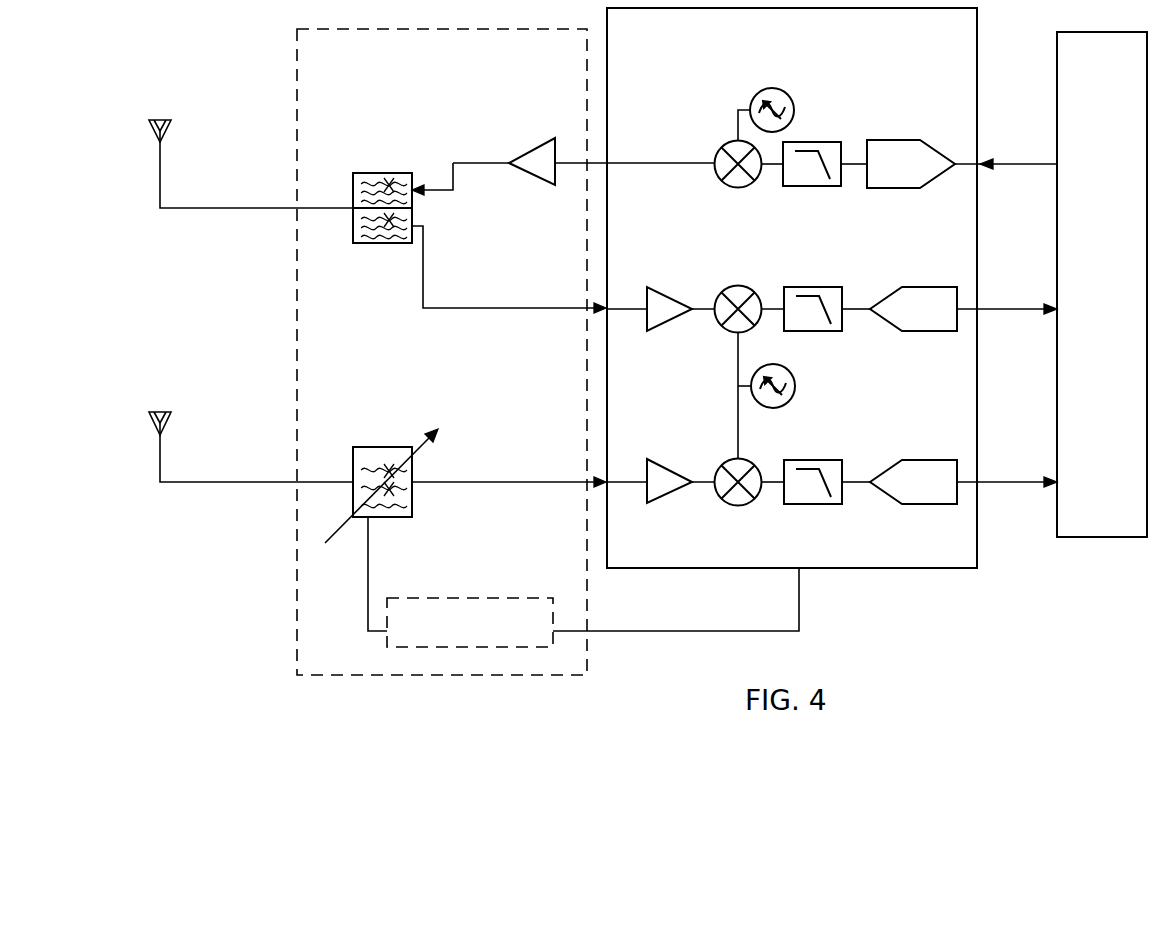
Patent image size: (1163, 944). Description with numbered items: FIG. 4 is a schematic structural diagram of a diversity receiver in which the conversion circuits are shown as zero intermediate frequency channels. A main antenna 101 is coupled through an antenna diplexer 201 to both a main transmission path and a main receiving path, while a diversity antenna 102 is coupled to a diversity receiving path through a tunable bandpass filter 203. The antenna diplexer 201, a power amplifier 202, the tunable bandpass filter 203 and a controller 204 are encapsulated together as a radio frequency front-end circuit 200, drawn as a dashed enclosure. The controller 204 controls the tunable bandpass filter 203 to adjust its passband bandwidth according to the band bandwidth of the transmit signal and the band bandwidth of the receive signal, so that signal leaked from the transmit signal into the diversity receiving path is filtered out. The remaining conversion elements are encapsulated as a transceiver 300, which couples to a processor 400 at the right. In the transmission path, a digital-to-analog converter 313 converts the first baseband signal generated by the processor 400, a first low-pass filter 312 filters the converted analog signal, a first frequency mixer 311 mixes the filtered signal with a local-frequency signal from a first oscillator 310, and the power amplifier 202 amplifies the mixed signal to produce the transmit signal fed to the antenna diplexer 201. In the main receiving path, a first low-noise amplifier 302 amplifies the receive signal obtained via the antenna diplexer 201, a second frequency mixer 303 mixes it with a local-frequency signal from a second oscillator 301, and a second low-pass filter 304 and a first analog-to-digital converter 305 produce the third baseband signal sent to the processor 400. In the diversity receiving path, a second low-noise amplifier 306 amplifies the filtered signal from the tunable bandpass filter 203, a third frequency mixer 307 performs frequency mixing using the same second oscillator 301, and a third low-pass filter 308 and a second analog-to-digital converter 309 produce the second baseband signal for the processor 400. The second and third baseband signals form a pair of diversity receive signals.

The main antenna 101 is at (160, 167).
The diversity antenna 102 is at (160, 458).
The radio frequency front-end circuit 200 is at (295, 593).
The antenna diplexer 201 is at (353, 215).
The power amplifier 202 is at (530, 147).
The tunable bandpass filter 203 is at (412, 517).
The controller 204 is at (538, 647).
The transceiver 300 is at (978, 544).
The second oscillator 301 is at (795, 384).
The first low-noise amplifier 302 is at (663, 331).
The second frequency mixer 303 is at (733, 285).
The second low-pass filter 304 is at (812, 331).
The first analog-to-digital converter 305 is at (918, 331).
The second low-noise amplifier 306 is at (672, 503).
The third frequency mixer 307 is at (737, 506).
The third low-pass filter 308 is at (815, 503).
The second analog-to-digital converter 309 is at (906, 503).
The first oscillator 310 is at (768, 87).
The first frequency mixer 311 is at (738, 188).
The first low-pass filter 312 is at (817, 187).
The digital-to-analog converter 313 is at (890, 188).
The processor 400 is at (1122, 537).